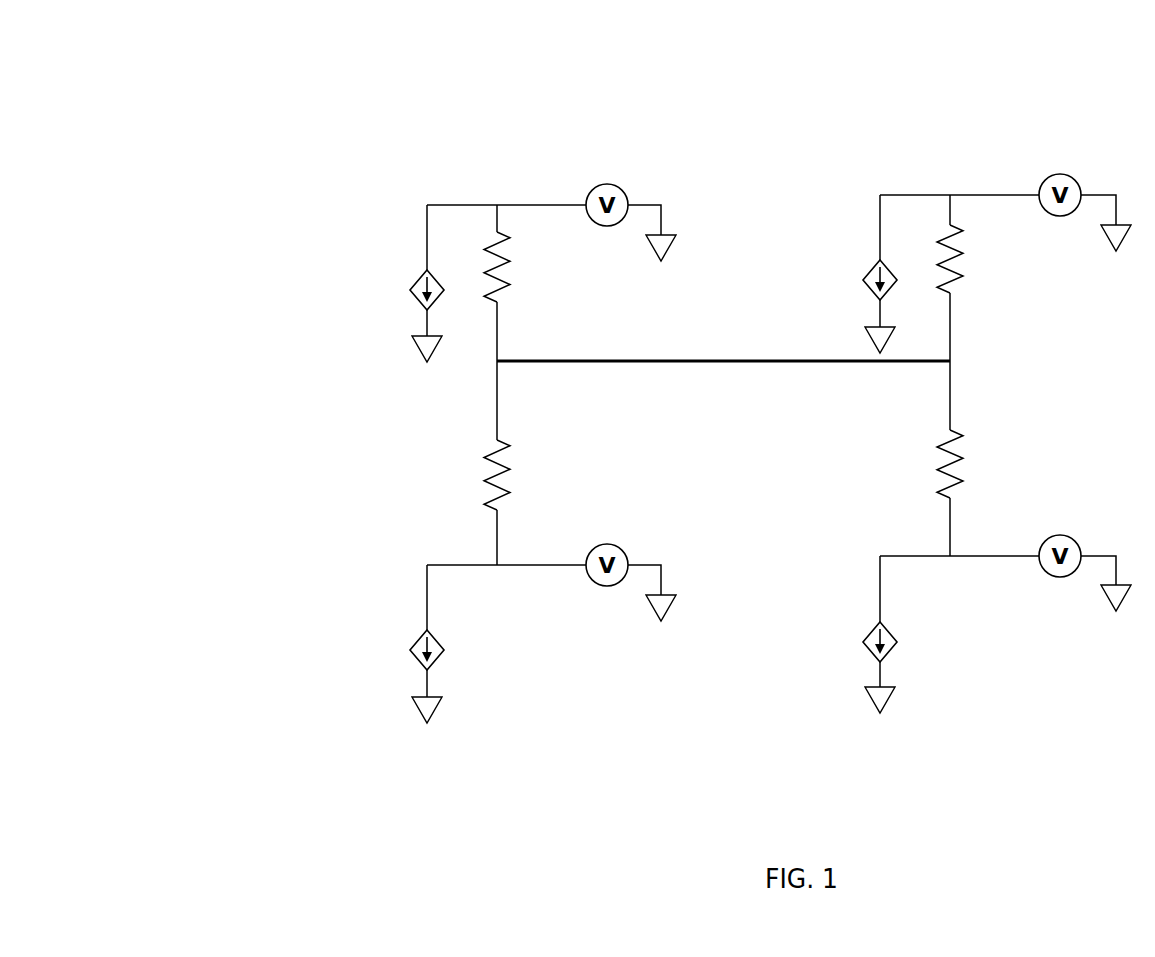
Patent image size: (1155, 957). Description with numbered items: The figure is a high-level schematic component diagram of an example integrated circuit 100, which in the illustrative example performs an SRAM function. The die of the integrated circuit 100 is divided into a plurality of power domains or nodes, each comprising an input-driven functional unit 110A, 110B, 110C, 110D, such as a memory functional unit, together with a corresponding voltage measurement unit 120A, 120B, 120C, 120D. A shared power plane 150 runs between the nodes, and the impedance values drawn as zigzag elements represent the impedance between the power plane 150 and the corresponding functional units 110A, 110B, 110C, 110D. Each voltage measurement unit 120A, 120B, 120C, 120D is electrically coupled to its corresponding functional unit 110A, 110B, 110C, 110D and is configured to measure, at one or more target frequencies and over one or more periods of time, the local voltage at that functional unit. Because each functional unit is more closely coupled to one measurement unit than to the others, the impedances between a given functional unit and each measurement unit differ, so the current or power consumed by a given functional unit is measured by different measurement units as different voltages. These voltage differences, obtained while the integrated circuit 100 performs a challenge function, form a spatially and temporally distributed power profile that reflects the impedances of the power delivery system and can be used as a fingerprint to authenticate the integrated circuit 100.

The integrated circuit 100 is at (488, 72).
The functional unit 110A is at (431, 245).
The functional unit 110B is at (429, 603).
The functional unit 110C is at (881, 238).
The functional unit 110D is at (882, 595).
The voltage measurement unit 120A is at (631, 206).
The voltage measurement unit 120B is at (631, 560).
The voltage measurement unit 120C is at (1081, 195).
The voltage measurement unit 120D is at (1085, 555).
The power plane 150 is at (723, 348).